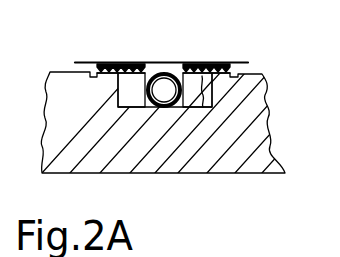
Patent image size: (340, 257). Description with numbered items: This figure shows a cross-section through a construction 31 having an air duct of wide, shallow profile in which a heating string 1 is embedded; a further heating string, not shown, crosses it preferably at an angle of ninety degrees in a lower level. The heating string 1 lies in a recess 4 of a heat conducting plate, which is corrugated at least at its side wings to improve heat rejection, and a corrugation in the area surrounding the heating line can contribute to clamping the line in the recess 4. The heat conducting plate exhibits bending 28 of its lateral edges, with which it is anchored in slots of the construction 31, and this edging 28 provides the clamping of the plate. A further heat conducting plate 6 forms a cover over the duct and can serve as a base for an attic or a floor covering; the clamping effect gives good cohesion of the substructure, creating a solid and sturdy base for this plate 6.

The heating string 1 is at (166, 84).
The recess 4 is at (193, 73).
The heat conducting plate forming a cover 6 is at (103, 70).
The bending of the lateral edges 28 is at (241, 62).
The construction 31 is at (268, 97).